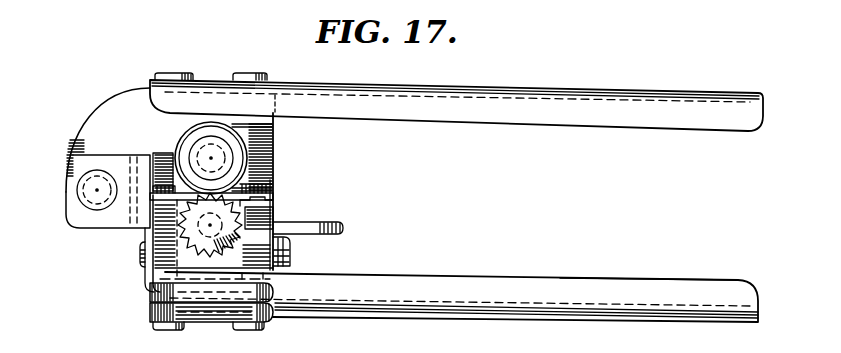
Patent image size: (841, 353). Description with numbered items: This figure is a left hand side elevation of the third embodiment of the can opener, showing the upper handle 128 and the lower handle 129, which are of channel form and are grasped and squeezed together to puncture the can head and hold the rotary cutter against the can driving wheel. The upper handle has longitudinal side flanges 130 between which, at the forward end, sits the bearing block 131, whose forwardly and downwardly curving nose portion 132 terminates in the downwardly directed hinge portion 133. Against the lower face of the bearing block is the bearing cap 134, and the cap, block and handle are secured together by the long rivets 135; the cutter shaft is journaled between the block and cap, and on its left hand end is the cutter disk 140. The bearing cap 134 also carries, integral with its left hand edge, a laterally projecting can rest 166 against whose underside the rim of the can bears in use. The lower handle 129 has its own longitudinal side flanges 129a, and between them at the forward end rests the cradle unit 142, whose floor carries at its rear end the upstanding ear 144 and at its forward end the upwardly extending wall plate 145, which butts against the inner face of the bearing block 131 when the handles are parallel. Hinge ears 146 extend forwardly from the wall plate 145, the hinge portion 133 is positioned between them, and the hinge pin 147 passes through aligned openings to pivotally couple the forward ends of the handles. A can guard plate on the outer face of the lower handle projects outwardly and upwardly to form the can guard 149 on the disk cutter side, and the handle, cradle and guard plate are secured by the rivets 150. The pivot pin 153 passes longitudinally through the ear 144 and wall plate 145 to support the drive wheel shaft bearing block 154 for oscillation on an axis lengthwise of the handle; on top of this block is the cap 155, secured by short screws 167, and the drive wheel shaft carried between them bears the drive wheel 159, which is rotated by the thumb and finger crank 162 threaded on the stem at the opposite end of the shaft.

The upper handle 128 is at (581, 83).
The lower handle 129 is at (704, 274).
The longitudinal side flanges 129a is at (602, 280).
The longitudinal side flanges 130 is at (660, 104).
The bearing block 131 is at (276, 138).
The nose portion 132 is at (113, 113).
The hinge portion 133 is at (74, 159).
The bearing cap 134 is at (268, 187).
The long rivets 135 is at (200, 78).
The cutter disk 140 is at (260, 161).
The cradle unit 142 is at (134, 297).
The upstanding ear 144 is at (288, 261).
The wall plate 145 is at (140, 277).
The hinge ears 146 is at (78, 182).
The hinge pin 147 is at (92, 192).
The can guard 149 is at (147, 309).
The rivets 150 is at (232, 322).
The pivot pin 153 is at (140, 254).
The bearing block 154 is at (288, 252).
The cap 155 is at (274, 214).
The drive wheel 159 is at (195, 226).
The thumb and finger crank 162 is at (343, 231).
The can rest 166 is at (157, 157).
The short screws 167 is at (275, 201).